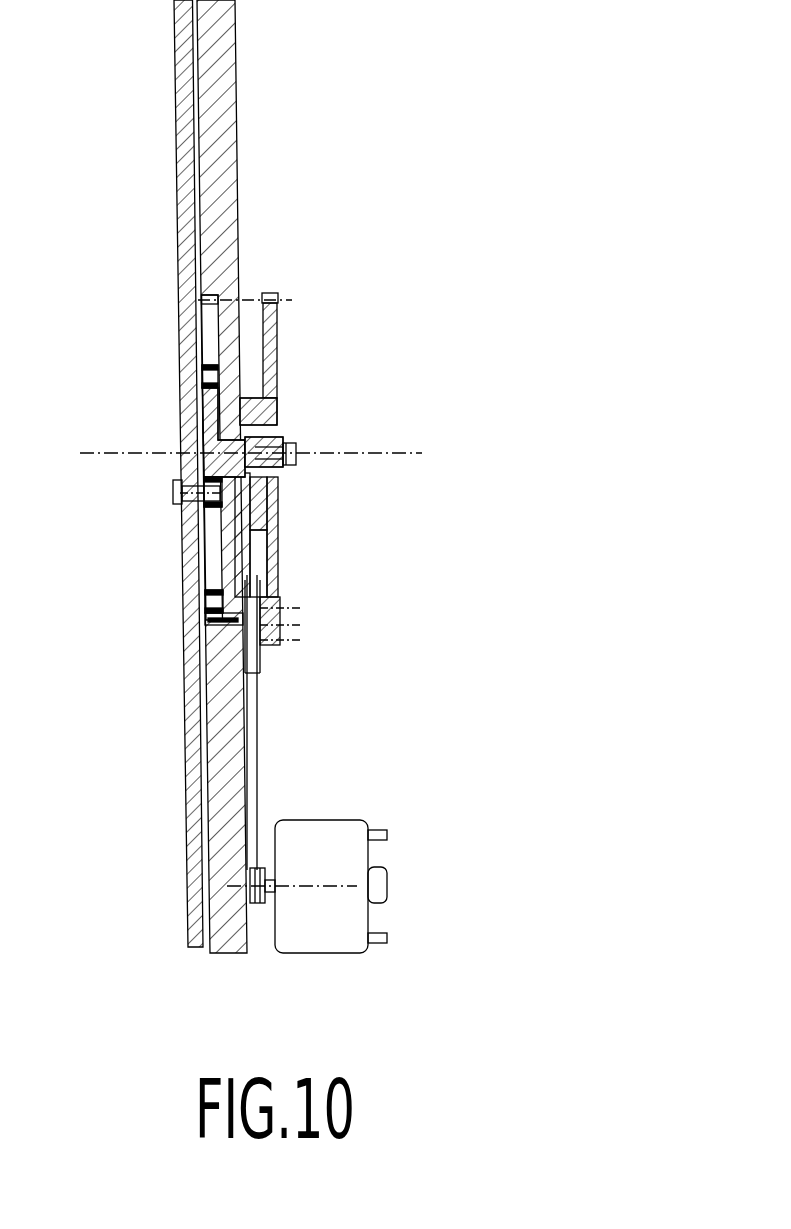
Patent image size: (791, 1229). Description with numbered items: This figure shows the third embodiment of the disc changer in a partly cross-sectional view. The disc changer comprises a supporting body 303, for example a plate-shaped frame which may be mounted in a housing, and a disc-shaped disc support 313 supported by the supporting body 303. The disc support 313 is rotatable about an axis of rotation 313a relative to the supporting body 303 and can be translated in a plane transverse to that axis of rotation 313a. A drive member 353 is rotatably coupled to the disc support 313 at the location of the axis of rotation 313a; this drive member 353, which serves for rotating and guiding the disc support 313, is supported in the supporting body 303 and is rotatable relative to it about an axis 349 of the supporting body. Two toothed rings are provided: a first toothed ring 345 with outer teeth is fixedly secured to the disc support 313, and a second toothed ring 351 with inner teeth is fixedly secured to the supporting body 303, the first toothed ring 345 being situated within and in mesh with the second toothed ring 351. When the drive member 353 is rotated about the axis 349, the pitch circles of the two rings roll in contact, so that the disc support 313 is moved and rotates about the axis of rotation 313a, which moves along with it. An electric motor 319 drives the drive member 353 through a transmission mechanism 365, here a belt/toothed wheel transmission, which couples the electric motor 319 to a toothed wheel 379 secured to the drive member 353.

The supporting body 303 is at (228, 200).
The disc support 313 is at (183, 570).
The axis of rotation 313a is at (170, 492).
The electric motor 319 is at (345, 937).
The first toothed ring 345 is at (182, 348).
The axis of the supporting body 349 is at (391, 450).
The second toothed ring 351 is at (200, 297).
The drive member 353 is at (258, 495).
The transmission mechanism 365 is at (305, 678).
The toothed wheel 379 is at (277, 370).